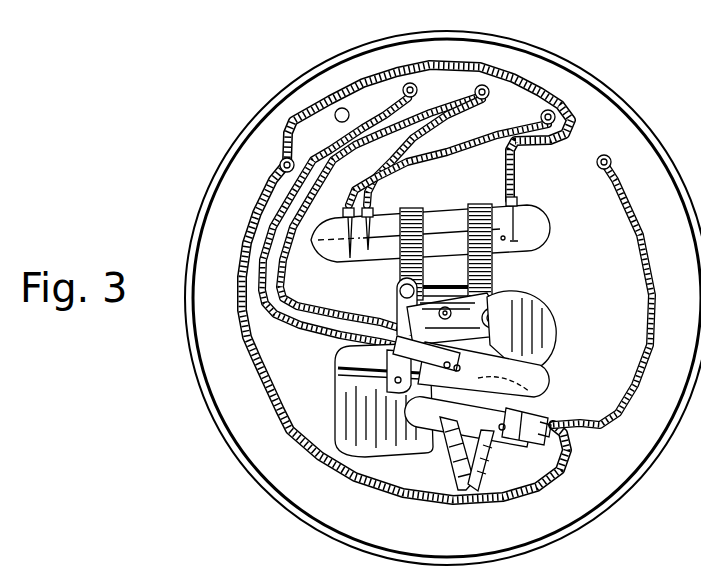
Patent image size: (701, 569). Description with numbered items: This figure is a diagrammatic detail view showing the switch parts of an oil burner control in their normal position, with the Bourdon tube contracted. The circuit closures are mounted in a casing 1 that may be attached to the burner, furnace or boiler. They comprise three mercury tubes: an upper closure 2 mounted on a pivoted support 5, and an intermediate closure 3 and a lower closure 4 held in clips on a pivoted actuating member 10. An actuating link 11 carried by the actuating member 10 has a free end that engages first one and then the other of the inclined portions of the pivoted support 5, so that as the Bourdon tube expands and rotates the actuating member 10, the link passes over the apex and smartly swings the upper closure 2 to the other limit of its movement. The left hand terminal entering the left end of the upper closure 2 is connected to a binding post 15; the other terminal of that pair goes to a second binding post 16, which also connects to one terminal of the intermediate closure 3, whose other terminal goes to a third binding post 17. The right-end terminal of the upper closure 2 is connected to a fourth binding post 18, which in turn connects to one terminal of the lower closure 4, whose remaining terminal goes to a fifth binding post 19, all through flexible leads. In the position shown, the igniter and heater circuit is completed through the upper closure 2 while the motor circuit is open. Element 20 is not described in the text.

The casing 1 is at (202, 209).
The upper closure 2 is at (537, 222).
The intermediate closure 3 is at (525, 384).
The lower closure 4 is at (522, 408).
The pivoted support 5 is at (492, 306).
The pivoted actuating member 10 is at (447, 443).
The actuating link 11 is at (399, 309).
The binding post 15 is at (540, 115).
The second binding post 16 is at (490, 94).
The third binding post 17 is at (417, 91).
The fourth binding post 18 is at (294, 165).
The fifth binding post 19 is at (609, 157).
The ring hook 20 is at (349, 110).